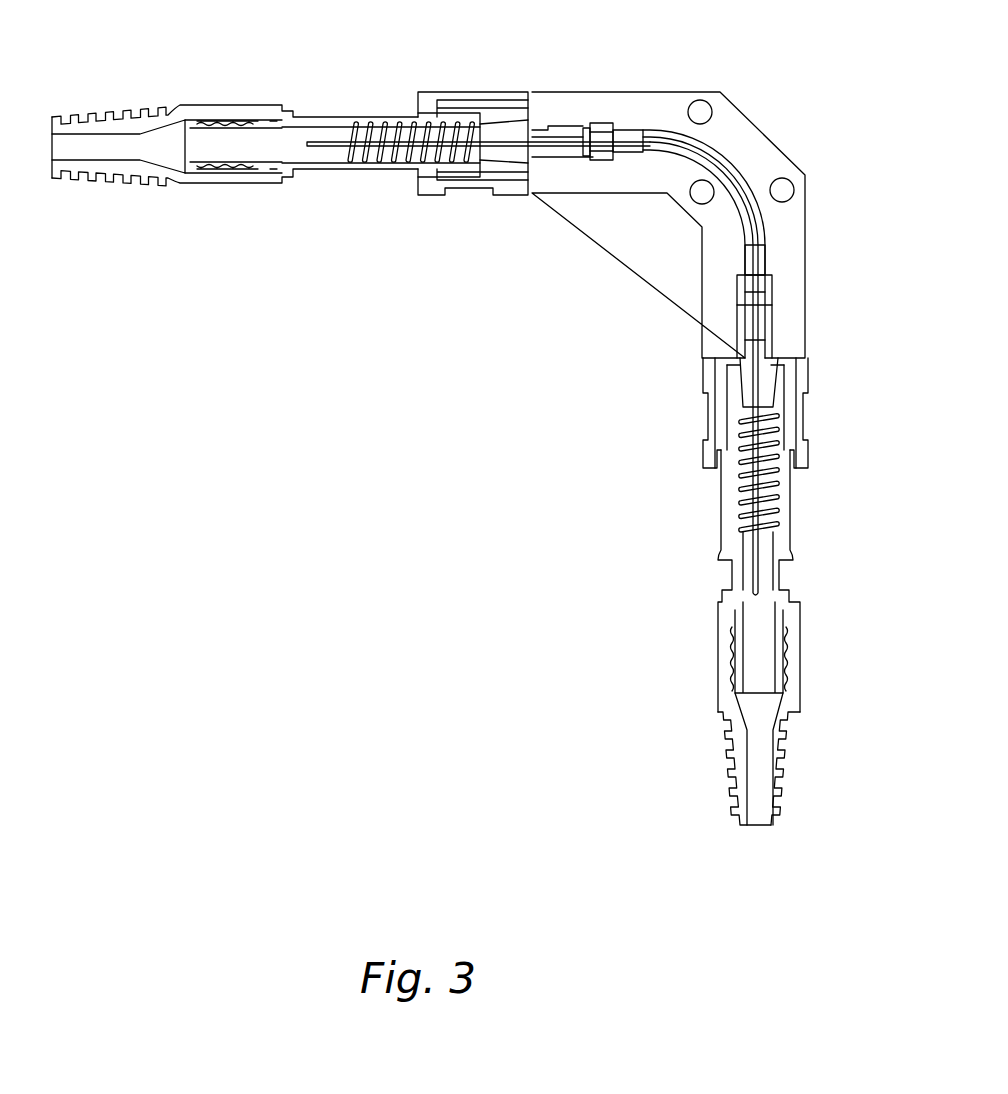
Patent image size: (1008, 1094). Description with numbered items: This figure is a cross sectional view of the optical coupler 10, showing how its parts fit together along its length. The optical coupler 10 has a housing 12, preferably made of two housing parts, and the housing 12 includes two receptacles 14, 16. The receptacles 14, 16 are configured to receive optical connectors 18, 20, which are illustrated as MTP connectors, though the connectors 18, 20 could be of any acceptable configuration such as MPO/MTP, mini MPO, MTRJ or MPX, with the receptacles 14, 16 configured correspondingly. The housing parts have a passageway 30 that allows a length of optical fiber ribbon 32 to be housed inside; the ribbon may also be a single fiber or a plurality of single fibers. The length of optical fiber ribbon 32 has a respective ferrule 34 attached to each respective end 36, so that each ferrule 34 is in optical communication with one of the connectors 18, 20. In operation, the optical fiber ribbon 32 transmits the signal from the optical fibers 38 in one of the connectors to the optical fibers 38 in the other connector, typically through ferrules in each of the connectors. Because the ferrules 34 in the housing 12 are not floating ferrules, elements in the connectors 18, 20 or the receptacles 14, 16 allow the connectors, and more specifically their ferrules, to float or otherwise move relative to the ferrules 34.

The optical coupler 10 is at (529, 333).
The housing 12 is at (702, 295).
The receptacle 14 is at (504, 92).
The receptacle 16 is at (808, 410).
The optical connector 18 is at (237, 183).
The optical connector 20 is at (723, 660).
The passageway 30 is at (747, 187).
The optical fiber ribbon 32 is at (745, 233).
The ferrule 34 is at (630, 128).
The end 36 is at (648, 130).
The optical fibers 38 is at (322, 140).